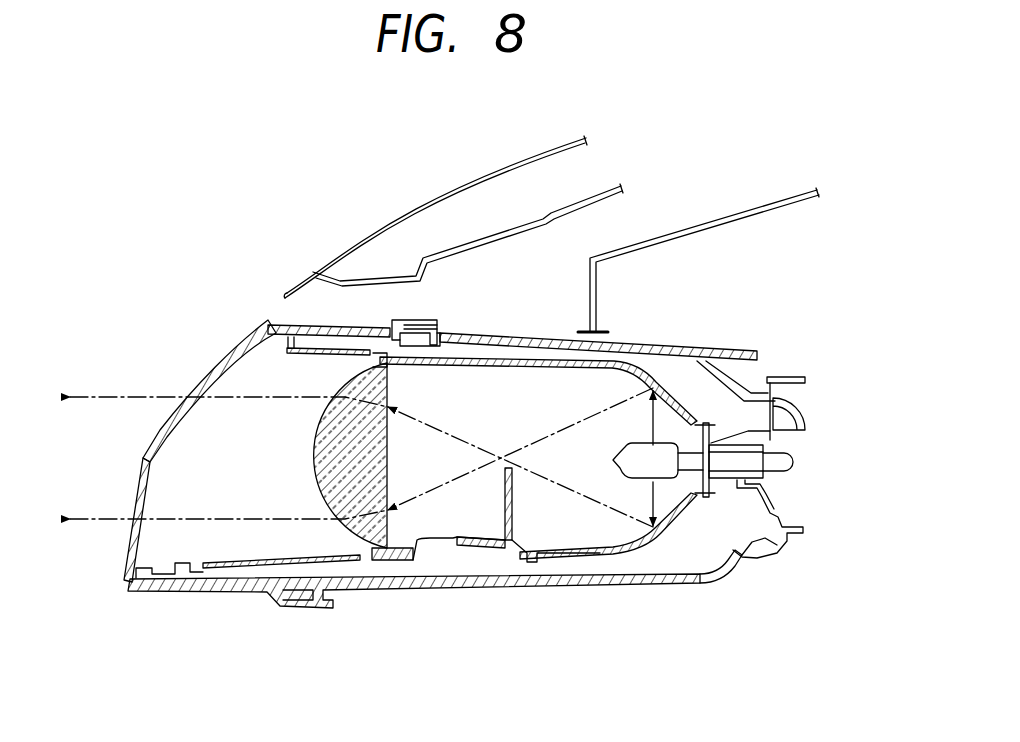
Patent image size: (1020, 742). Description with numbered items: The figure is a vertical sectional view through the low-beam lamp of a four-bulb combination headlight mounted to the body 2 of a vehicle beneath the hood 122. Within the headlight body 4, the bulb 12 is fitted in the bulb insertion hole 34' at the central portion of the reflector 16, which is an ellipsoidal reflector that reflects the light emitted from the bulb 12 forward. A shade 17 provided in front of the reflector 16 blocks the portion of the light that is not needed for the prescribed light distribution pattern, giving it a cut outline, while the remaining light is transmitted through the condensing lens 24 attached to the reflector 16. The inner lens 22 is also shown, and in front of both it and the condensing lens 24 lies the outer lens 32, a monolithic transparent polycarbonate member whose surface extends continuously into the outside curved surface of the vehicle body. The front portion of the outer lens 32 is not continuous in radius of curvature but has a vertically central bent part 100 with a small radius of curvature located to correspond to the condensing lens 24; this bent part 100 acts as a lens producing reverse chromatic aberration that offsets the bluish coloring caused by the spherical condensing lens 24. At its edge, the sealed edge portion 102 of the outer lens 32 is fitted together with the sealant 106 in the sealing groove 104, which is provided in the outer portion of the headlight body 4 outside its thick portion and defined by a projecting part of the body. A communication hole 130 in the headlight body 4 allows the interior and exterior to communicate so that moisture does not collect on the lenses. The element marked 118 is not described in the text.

The body of the vehicle 2 is at (713, 215).
The headlight body 4 is at (646, 350).
The bulb 12 is at (628, 471).
The reflector 16 is at (685, 540).
The shade 17 is at (545, 505).
The inner lens 22 is at (163, 566).
The condensing lens 24 is at (320, 478).
The outer lens 32 is at (142, 478).
The bulb insertion hole 34' is at (383, 457).
The bent part 100 is at (162, 422).
The sealed edge portion 102 is at (441, 341).
The sealing groove 104 is at (416, 330).
The sealant 106 is at (432, 353).
The lip 118 is at (405, 322).
The hood 122 is at (458, 188).
The communication hole 130 is at (800, 414).